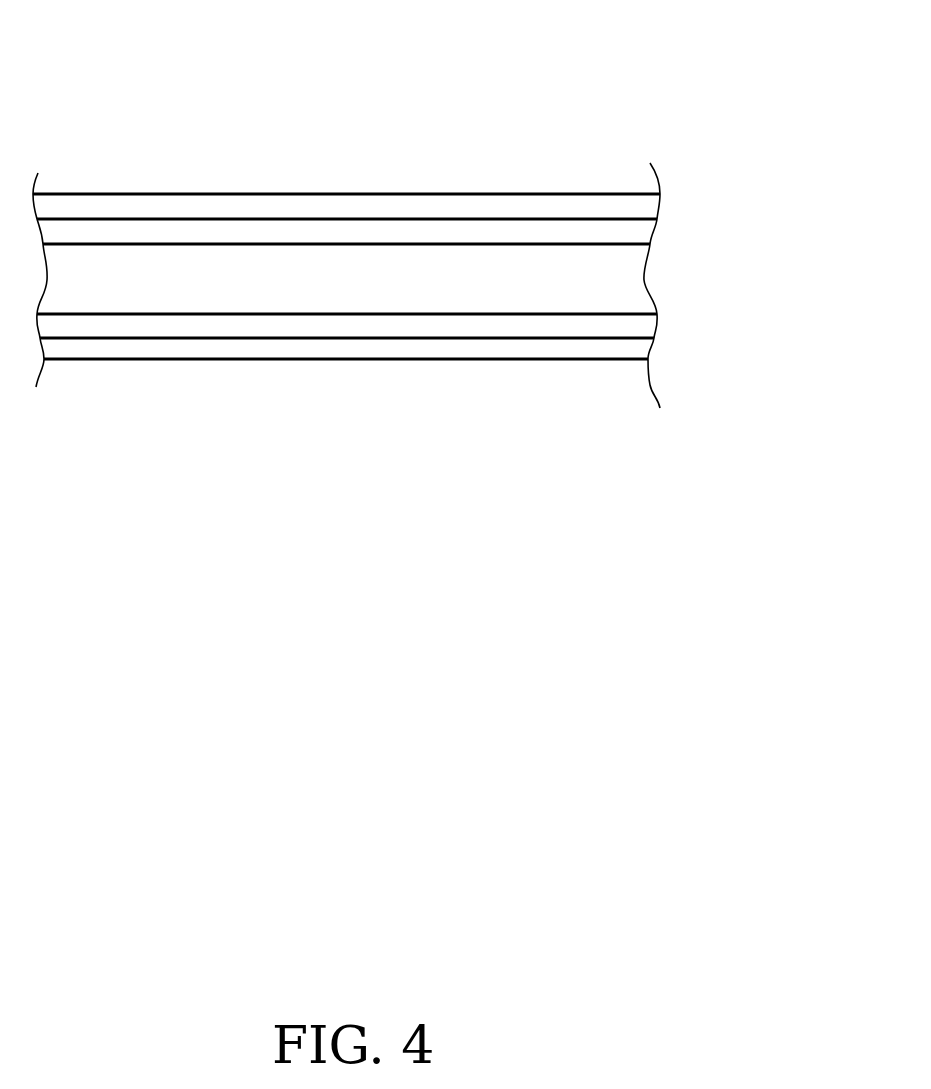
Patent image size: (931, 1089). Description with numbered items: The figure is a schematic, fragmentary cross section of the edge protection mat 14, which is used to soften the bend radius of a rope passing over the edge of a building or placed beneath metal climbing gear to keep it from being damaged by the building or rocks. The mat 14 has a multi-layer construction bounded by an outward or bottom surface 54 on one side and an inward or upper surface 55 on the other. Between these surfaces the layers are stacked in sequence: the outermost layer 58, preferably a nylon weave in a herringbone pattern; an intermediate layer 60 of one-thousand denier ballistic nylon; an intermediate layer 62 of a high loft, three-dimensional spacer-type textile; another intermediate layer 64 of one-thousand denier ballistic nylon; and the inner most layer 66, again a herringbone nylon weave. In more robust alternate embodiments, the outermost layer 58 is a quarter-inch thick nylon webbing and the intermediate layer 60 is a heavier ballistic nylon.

The edge protection mat 14 is at (568, 78).
The outward or bottom surface 54 is at (258, 362).
The inward or upper surface 55 is at (478, 193).
The outermost layer 58 is at (352, 348).
The intermediate layer 60 is at (469, 323).
The intermediate layer 62 is at (408, 293).
The intermediate layer 64 is at (398, 233).
The inner most layer 66 is at (308, 203).